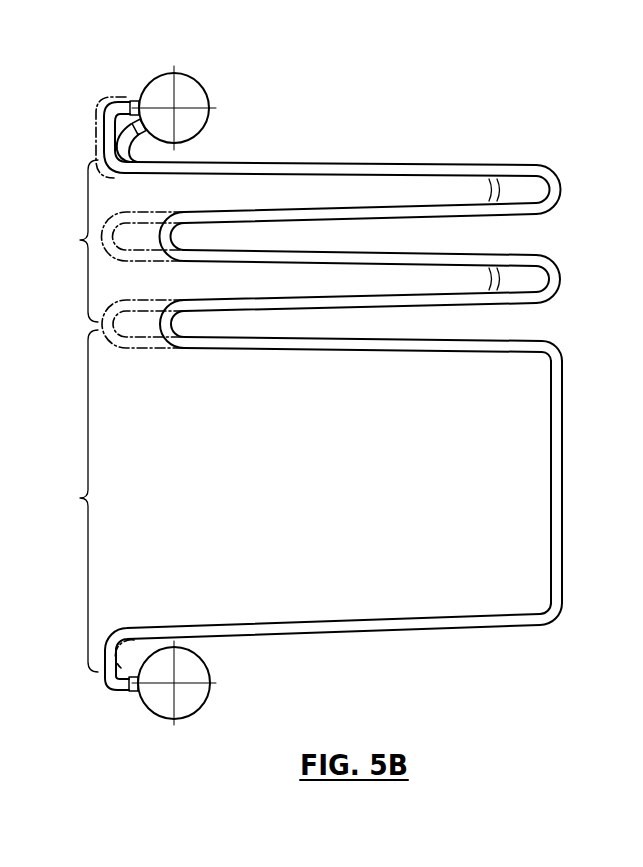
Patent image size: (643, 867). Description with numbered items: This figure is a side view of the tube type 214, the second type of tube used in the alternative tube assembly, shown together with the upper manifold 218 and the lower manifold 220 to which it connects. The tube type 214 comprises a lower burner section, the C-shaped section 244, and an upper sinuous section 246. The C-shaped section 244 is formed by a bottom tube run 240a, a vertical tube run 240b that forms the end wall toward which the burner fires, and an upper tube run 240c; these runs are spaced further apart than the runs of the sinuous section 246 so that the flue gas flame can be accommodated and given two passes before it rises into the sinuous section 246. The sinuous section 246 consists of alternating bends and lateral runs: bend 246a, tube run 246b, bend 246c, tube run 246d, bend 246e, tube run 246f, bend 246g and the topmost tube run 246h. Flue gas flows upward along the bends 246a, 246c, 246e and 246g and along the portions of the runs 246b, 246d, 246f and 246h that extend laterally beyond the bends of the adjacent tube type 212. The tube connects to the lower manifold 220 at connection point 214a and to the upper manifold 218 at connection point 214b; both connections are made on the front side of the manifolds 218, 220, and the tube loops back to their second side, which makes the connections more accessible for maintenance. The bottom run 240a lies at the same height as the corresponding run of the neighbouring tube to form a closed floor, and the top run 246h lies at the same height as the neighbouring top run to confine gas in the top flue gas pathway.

The tube type 212 is at (121, 342).
The tube type 214 is at (410, 118).
The connection point 214a is at (131, 692).
The connection point 214b is at (126, 170).
The upper manifold 218 is at (192, 92).
The lower manifold 220 is at (206, 704).
The tube run 240a is at (343, 628).
The tube run 240b is at (551, 490).
The tube run 240c is at (508, 353).
The C-shaped section 244 is at (297, 514).
The sinuous section 246 is at (330, 253).
The bend 246a is at (172, 325).
The tube run 246b is at (398, 305).
The bend 246c is at (559, 262).
The tube run 246d is at (437, 268).
The bend 246e is at (174, 230).
The tube run 246f is at (353, 204).
The bend 246g is at (557, 174).
The tube run 246h is at (298, 162).